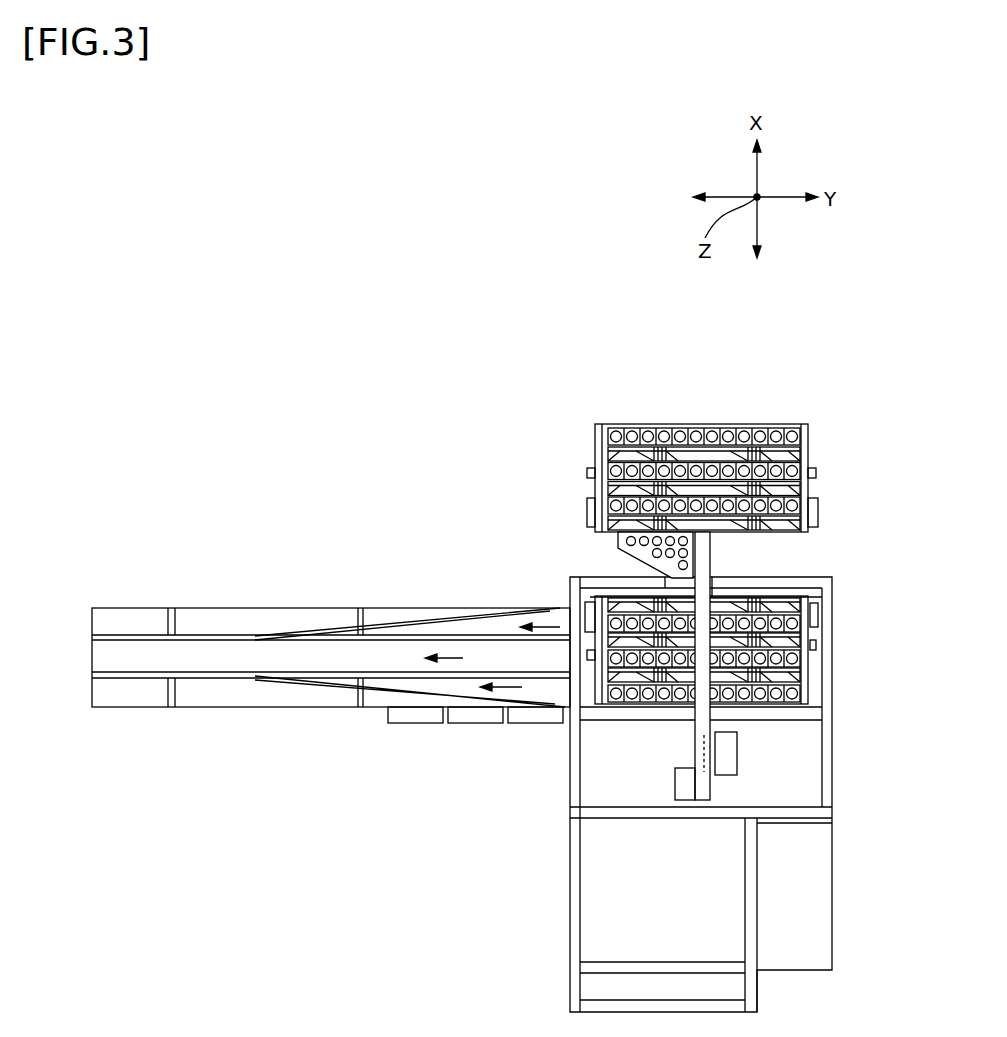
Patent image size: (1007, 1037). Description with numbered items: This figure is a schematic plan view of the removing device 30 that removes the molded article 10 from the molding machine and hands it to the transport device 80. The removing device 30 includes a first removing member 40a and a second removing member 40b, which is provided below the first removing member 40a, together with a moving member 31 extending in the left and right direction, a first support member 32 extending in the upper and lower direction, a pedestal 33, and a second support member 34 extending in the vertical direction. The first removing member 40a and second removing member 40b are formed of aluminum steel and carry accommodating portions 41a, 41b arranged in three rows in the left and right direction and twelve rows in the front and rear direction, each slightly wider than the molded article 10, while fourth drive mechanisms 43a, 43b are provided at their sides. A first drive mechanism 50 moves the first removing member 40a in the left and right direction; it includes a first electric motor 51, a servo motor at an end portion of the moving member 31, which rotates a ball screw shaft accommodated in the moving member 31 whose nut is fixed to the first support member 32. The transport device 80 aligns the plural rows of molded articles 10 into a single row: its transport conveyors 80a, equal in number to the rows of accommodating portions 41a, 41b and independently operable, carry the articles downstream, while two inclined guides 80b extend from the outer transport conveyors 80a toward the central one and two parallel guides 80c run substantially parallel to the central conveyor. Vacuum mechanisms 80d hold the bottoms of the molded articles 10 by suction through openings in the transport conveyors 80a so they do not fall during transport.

The removing device 30 is at (828, 395).
The molded article 10 is at (746, 426).
The first removing member 40a is at (783, 425).
The second removing member 40b is at (600, 598).
The accommodating portions 41a is at (661, 425).
The accommodating portions 41b is at (615, 612).
The fourth drive mechanism 43a is at (817, 508).
The fourth drive mechanism 43b is at (818, 617).
The moving member 31 is at (710, 549).
The first support member 32 is at (737, 753).
The pedestal 33 is at (790, 737).
The second support member 34 is at (725, 581).
The first drive mechanism 50 is at (683, 759).
The first electric motor 51 is at (678, 786).
The transport device 80 is at (190, 617).
The transport conveyors 80a is at (106, 617).
The inclined guides 80b is at (396, 620).
The parallel guides 80c is at (218, 636).
The vacuum mechanisms 80d is at (418, 718).